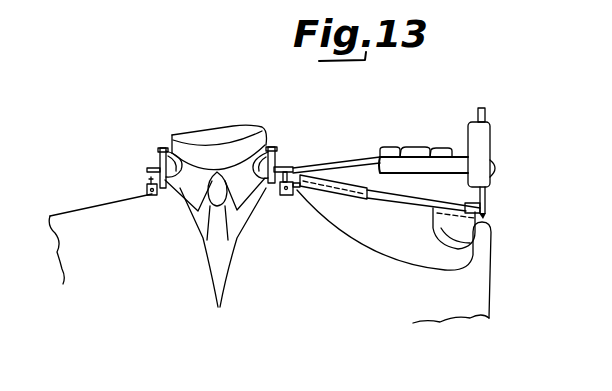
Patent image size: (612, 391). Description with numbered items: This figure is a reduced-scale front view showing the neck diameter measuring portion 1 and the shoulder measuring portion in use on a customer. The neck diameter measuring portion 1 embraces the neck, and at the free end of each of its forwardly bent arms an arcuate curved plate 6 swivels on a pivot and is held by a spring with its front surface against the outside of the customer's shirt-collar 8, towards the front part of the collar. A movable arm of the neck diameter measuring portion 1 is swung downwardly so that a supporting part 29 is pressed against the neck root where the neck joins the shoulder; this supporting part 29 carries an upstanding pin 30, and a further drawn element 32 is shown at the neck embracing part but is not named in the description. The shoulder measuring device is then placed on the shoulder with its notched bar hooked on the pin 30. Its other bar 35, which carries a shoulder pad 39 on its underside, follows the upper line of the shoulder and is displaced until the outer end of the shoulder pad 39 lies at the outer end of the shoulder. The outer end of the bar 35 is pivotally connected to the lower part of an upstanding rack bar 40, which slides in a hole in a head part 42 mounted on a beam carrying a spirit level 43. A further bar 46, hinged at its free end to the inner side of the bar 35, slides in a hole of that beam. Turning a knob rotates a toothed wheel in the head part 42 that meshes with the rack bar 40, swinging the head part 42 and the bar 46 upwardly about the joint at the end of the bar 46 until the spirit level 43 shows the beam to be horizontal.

The neck diameter measuring portion 1 is at (147, 143).
The arcuate curved plate 6 is at (172, 166).
The shirt-collar 8 is at (197, 178).
The supporting part 29 is at (290, 195).
The upstanding pin 30 is at (290, 172).
The right clamp bar 32 is at (283, 167).
The bar 35 is at (405, 204).
The shoulder pad 39 is at (414, 263).
The upstanding rack bar 40 is at (484, 198).
The head part 42 is at (491, 138).
The spirit level 43 is at (414, 152).
The bar 46 is at (356, 166).